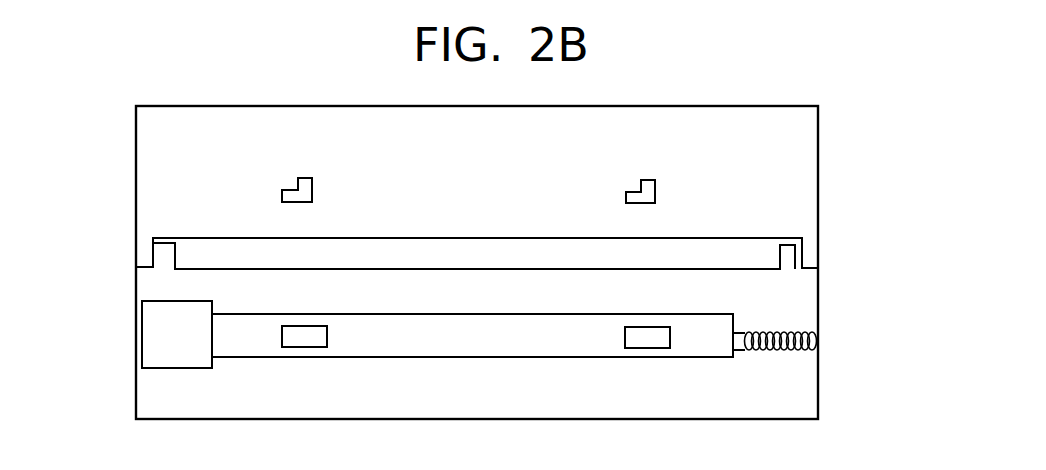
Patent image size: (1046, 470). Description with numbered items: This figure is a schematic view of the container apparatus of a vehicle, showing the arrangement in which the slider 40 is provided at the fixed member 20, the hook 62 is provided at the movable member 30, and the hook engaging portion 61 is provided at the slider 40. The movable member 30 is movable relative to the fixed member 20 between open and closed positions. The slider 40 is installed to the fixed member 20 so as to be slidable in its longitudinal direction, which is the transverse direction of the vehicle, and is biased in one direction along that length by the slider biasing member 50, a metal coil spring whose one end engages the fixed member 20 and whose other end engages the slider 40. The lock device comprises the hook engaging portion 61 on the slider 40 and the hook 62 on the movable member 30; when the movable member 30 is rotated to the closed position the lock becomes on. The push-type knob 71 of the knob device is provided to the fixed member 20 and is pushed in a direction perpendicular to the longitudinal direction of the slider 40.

The movable member 30 is at (136, 135).
The fixed member 20 is at (136, 371).
The knob 71 is at (176, 327).
The slider 40 is at (248, 342).
The hook engaging portion 61 is at (285, 328).
The hook 62 is at (305, 180).
The slider biasing member 50 is at (775, 347).